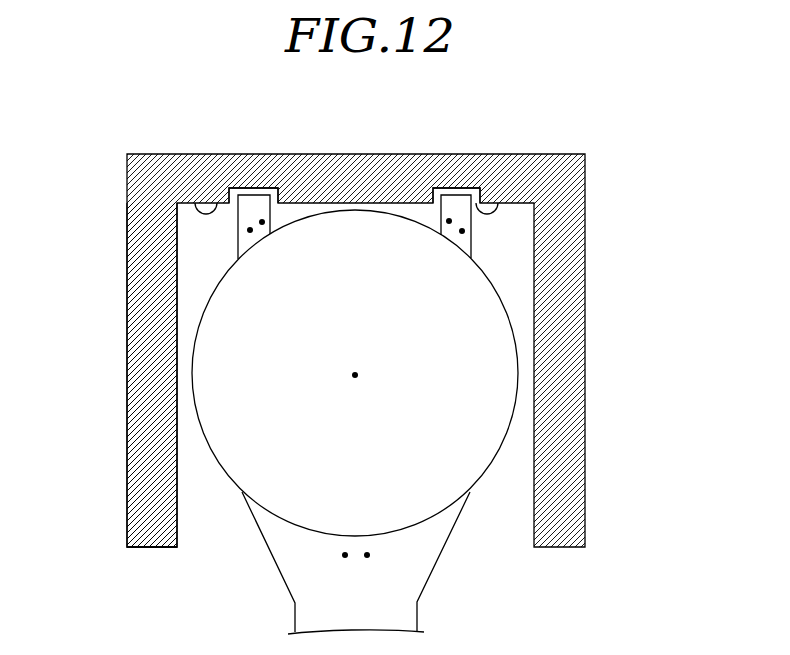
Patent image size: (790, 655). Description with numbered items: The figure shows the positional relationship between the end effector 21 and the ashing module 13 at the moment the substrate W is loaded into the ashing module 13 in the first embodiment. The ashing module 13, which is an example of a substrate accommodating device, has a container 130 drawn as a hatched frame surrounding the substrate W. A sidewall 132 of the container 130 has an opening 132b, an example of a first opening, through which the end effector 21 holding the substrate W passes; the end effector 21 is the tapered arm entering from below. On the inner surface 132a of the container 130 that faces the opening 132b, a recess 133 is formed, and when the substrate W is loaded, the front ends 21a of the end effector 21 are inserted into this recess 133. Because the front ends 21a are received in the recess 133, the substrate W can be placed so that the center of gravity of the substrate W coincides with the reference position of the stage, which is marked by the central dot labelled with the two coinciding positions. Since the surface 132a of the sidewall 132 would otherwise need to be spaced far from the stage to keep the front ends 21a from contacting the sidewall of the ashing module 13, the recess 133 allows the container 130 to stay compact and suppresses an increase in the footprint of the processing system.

The ashing module 13 is at (585, 233).
The container 130 is at (585, 410).
The sidewall 132 is at (127, 422).
The inner surface 132a is at (217, 200).
The opening 132b is at (177, 492).
The recess 133 is at (497, 202).
The end effector 21 is at (273, 567).
The front ends 21a is at (455, 195).
The substrate W is at (505, 296).